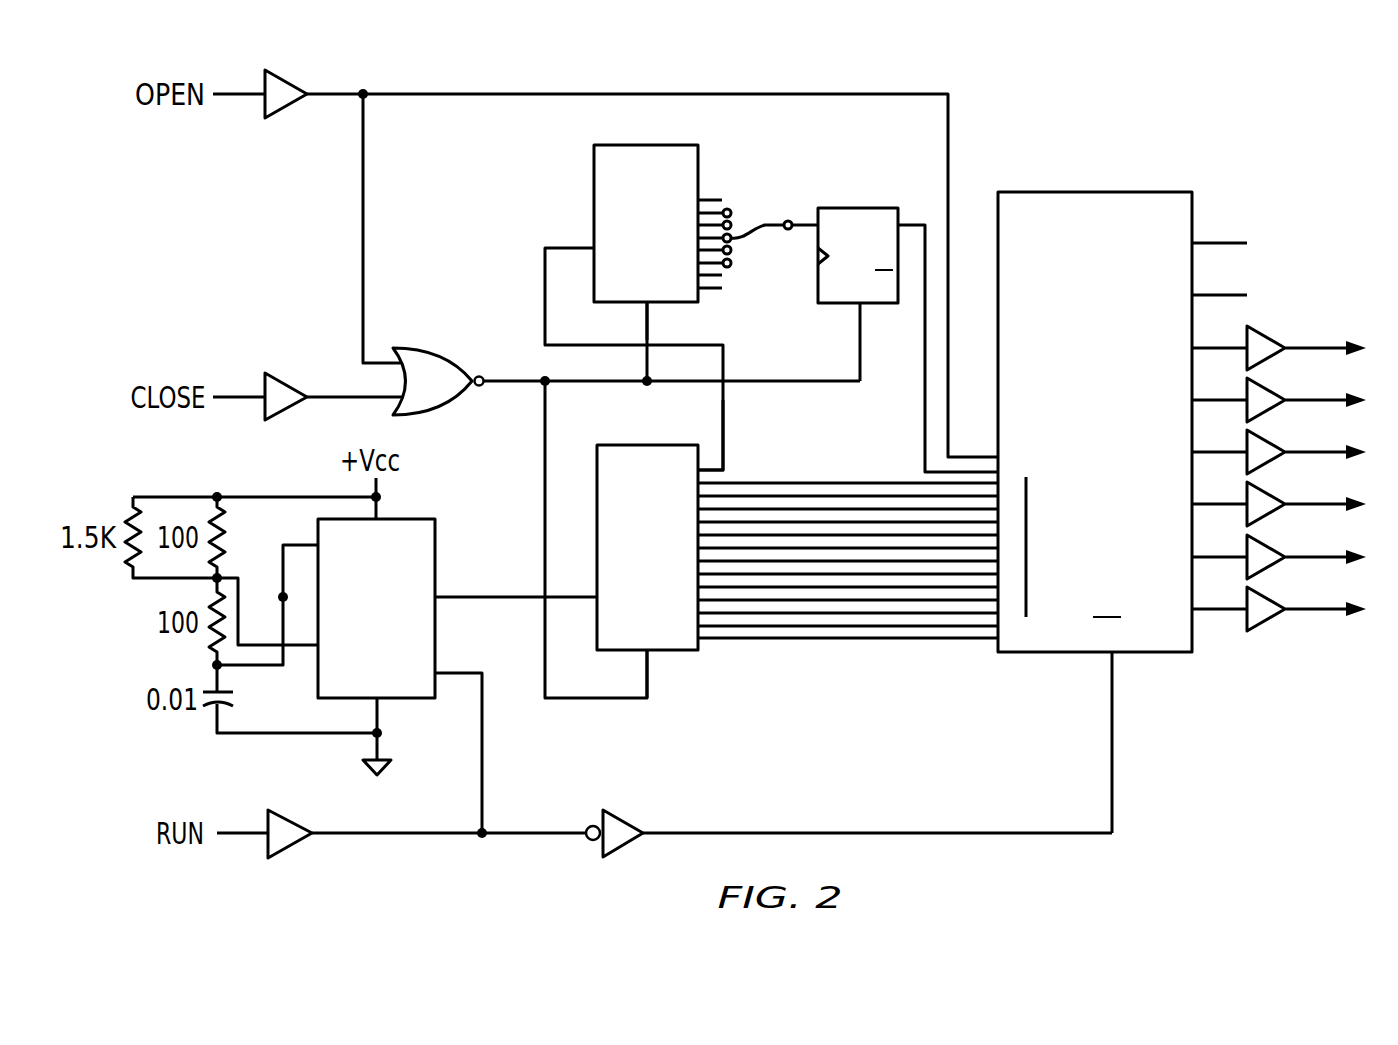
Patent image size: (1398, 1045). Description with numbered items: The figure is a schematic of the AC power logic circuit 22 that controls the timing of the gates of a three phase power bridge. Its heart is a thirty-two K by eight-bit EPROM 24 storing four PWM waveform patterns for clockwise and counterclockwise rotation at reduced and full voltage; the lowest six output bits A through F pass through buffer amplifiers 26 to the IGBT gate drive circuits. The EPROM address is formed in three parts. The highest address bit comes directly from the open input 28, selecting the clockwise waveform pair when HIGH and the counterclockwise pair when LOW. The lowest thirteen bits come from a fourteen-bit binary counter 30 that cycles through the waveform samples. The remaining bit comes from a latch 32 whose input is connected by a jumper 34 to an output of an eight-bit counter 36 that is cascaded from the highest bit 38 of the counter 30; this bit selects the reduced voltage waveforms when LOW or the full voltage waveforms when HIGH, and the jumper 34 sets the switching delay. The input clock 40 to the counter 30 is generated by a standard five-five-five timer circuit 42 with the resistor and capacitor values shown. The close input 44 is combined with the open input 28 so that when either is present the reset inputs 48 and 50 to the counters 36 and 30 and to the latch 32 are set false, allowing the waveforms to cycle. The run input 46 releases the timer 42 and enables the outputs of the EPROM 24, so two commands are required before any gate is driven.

The AC power logic circuit 22 is at (802, 706).
The EPROM 24 is at (1075, 371).
The buffer amplifiers 26 is at (1272, 341).
The open input 28 is at (240, 94).
The 14-bit binary counter 30 is at (630, 563).
The latch 32 is at (843, 268).
The jumper 34 is at (750, 228).
The 8-bit counter 36 is at (704, 166).
The highest bit of the 14-bit counter 38 is at (725, 460).
The input clock 40 is at (596, 596).
The 555 timer circuit 42 is at (362, 627).
The close input 44 is at (240, 397).
The run input 46 is at (240, 833).
The reset input of 14-bit counter 48 is at (650, 304).
The reset input of 8-bit counter 50 is at (648, 652).